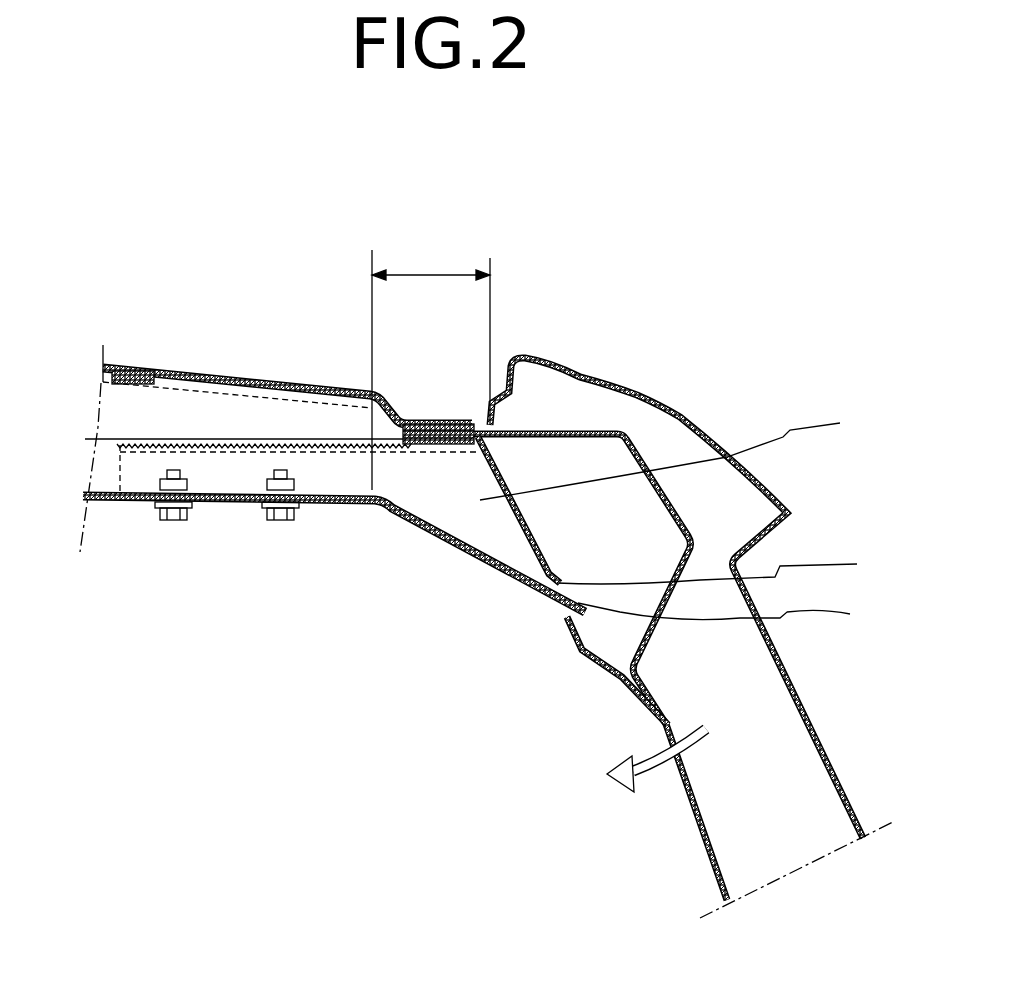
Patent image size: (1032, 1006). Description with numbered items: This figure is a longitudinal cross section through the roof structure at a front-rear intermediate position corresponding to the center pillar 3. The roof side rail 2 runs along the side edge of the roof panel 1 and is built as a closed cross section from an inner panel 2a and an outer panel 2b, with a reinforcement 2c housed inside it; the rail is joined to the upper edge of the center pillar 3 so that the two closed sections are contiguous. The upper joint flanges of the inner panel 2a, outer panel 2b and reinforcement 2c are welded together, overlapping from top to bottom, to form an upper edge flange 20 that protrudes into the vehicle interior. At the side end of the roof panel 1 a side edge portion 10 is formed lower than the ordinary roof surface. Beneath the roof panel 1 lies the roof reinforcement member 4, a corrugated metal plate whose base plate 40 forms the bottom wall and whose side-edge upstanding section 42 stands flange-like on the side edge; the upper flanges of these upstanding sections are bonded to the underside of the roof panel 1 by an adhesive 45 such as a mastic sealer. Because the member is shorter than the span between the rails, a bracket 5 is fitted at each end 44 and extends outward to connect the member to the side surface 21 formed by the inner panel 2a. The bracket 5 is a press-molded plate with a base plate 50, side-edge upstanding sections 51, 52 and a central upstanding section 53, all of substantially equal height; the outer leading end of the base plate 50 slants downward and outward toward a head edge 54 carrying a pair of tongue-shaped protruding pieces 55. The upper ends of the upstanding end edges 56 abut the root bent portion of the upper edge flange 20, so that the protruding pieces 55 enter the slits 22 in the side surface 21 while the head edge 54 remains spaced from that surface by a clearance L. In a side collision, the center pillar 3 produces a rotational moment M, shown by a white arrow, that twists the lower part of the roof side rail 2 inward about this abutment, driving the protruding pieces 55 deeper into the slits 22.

The roof panel 1 is at (236, 380).
The roof side rail 2 is at (696, 599).
The inner panel 2a is at (578, 653).
The outer panel 2b is at (635, 390).
The reinforcement 2c is at (696, 618).
The center pillar 3 is at (817, 725).
The roof reinforcement member 4 is at (94, 401).
The bracket 5 is at (136, 527).
The side edge portion 10 is at (437, 423).
The upper edge flange 20 is at (457, 417).
The side surface 21 is at (520, 558).
The slits 22 is at (727, 565).
The base plate 40 is at (314, 445).
The side-edge upstanding section 42 is at (182, 412).
The end 44 is at (318, 491).
The adhesive 45 is at (133, 364).
The base plate 50 is at (334, 578).
The side-edge upstanding section 51 is at (334, 578).
The side-edge upstanding section 52 is at (334, 578).
The central upstanding section 53 is at (420, 482).
The head edge 54 is at (477, 447).
The protruding pieces 55 is at (737, 616).
The upstanding end edges 56 is at (682, 451).
The overlap length L is at (431, 261).
The rotational moment M is at (641, 764).